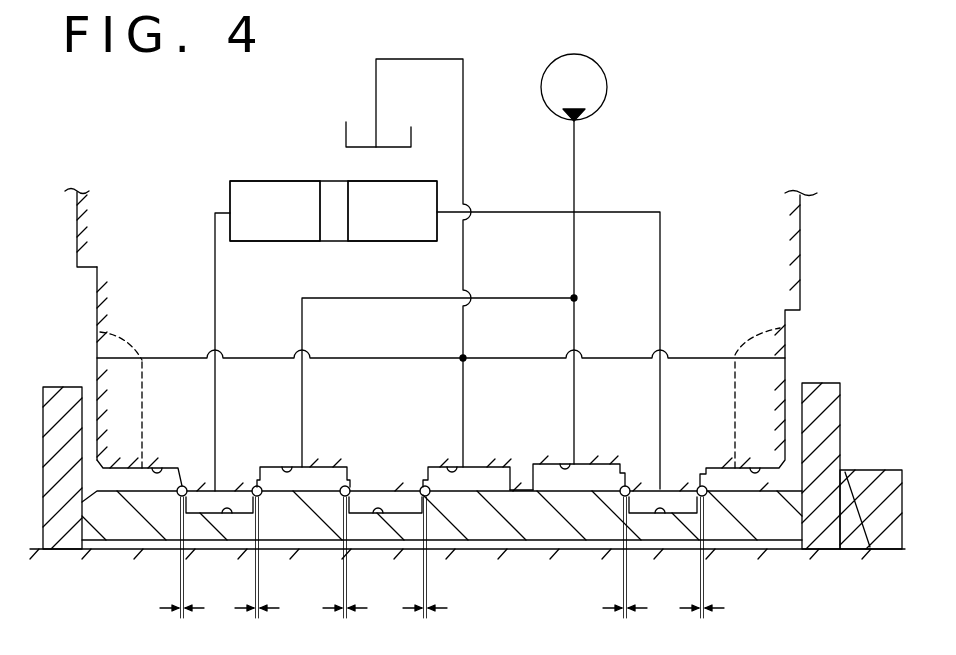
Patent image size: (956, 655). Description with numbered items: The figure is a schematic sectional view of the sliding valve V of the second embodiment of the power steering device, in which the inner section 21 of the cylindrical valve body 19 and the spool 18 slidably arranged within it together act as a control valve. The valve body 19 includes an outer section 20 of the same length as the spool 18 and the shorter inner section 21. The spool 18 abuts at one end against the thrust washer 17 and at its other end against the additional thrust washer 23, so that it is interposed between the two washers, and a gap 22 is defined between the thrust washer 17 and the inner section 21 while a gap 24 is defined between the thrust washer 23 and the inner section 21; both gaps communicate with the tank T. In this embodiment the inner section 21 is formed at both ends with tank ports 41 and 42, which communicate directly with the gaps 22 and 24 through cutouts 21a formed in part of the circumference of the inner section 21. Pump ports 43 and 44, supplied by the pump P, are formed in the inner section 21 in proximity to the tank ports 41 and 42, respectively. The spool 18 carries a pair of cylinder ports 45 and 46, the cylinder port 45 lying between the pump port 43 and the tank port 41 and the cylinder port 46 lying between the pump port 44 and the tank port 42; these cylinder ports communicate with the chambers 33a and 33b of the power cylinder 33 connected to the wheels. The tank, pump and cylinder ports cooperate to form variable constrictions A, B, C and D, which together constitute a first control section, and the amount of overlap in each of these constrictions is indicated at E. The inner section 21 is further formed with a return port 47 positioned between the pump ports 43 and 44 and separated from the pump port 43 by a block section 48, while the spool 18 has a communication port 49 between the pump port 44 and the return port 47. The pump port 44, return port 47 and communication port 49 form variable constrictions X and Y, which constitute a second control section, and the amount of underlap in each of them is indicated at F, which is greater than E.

The thrust washer 17 is at (830, 392).
The spool 18 is at (503, 538).
The valve body 19 is at (32, 242).
The outer section 20 is at (76, 236).
The inner section 21 is at (97, 302).
The cutouts 21a is at (161, 355).
The gap 22 is at (790, 378).
The additional thrust washer 23 is at (47, 385).
The gap 24 is at (85, 386).
The power cylinder 33 is at (328, 181).
The chamber 33a is at (268, 190).
The chamber 33b is at (393, 230).
The tank port 41 is at (755, 466).
The tank port 42 is at (156, 465).
The pump port 43 is at (566, 464).
The pump port 44 is at (287, 466).
The cylinder port 45 is at (666, 514).
The cylinder port 46 is at (228, 514).
The return port 47 is at (451, 466).
The block section 48 is at (523, 485).
The communication port 49 is at (378, 514).
The tank T is at (411, 130).
The pump P is at (604, 90).
The variable constriction A is at (259, 502).
The variable constriction B is at (623, 500).
The variable constriction C is at (179, 502).
The variable constriction D is at (705, 500).
The variable constriction X is at (343, 487).
The variable constriction Y is at (427, 502).
The amount of overlap E is at (442, 569).
The amount of underlap F is at (385, 569).
The sliding valve V is at (58, 570).